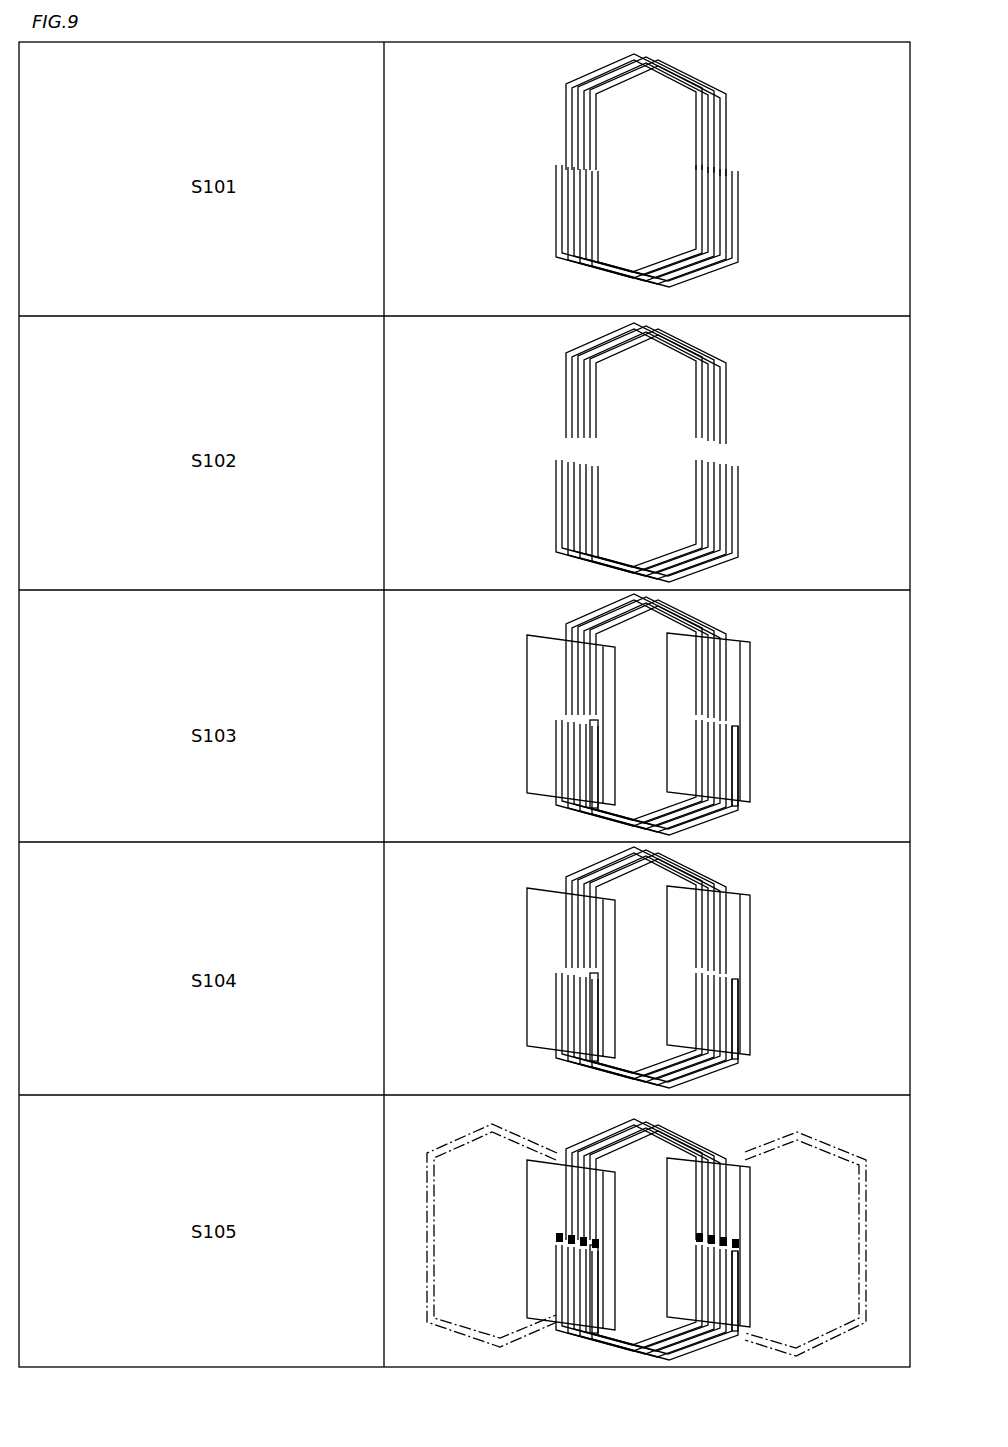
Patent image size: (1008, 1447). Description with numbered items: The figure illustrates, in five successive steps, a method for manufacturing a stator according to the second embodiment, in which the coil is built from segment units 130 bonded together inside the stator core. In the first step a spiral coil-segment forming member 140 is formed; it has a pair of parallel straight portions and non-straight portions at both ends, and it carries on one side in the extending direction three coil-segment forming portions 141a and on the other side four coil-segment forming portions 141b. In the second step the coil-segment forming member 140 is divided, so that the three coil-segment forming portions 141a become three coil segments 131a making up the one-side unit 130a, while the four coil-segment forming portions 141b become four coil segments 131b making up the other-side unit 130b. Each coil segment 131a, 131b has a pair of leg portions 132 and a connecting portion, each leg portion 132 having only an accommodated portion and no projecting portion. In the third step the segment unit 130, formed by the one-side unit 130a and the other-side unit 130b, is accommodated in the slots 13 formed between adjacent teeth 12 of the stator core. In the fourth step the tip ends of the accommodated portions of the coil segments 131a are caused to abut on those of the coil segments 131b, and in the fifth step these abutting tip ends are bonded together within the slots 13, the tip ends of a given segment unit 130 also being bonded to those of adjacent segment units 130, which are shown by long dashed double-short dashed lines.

The teeth 12 is at (540, 710).
The slot 13 is at (598, 716).
The segment unit 130 is at (760, 612).
The one-side unit 130a is at (572, 383).
The other-side unit 130b is at (578, 514).
The coil segment 131a is at (572, 383).
The coil segment 131b is at (578, 521).
The leg portion 132 is at (567, 377).
The coil-segment forming member 140 is at (620, 170).
The coil-segment forming portions 141a is at (592, 138).
The coil-segment forming portions 141b is at (556, 250).